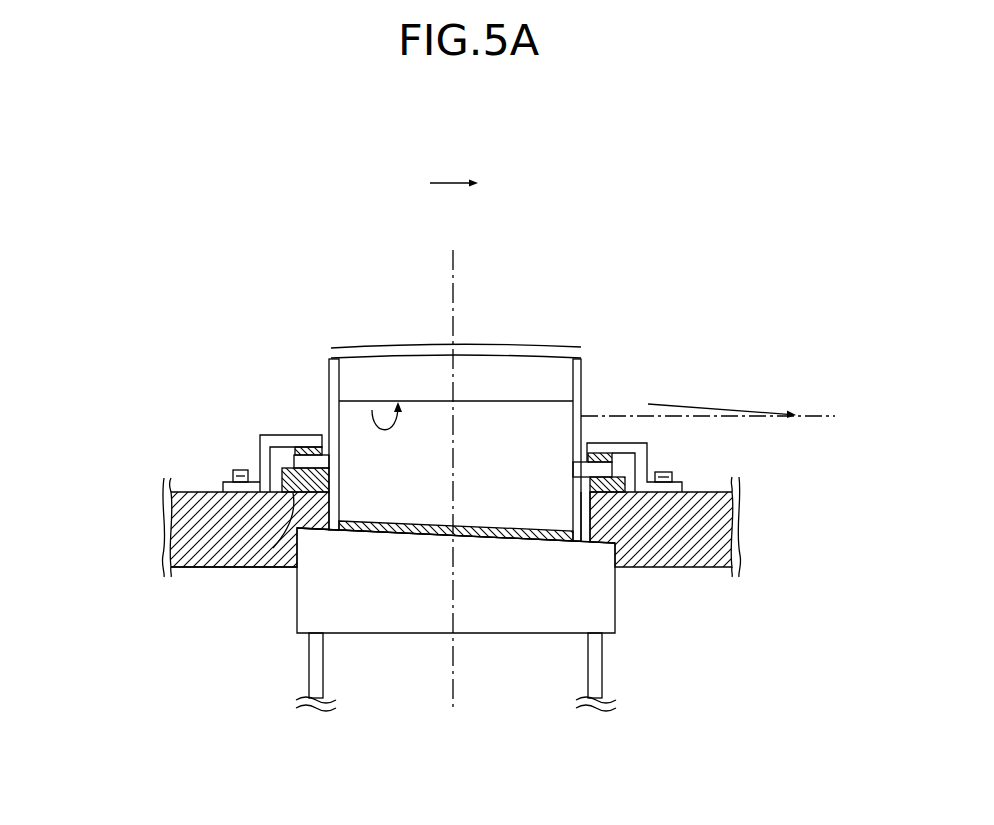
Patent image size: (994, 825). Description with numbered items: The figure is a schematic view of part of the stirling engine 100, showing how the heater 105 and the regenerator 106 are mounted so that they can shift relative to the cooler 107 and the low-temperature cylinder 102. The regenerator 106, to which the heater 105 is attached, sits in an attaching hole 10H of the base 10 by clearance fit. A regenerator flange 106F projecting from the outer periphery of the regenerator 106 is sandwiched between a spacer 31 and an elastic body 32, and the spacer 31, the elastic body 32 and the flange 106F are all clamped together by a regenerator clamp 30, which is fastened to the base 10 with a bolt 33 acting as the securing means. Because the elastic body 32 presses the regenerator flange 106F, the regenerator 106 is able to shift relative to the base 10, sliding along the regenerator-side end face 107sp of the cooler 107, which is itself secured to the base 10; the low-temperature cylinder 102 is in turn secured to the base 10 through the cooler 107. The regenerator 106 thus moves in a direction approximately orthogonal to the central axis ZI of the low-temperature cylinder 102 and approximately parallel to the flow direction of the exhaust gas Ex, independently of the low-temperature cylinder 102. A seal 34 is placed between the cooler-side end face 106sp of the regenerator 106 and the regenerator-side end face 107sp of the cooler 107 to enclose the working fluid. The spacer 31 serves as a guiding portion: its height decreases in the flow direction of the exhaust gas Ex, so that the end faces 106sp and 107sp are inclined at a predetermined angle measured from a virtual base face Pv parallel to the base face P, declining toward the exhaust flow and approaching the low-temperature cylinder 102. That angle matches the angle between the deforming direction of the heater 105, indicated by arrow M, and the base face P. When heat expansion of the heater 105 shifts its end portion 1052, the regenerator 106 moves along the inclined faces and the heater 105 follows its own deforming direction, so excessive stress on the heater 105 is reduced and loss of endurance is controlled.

The base 10 is at (193, 490).
The attaching hole 10H is at (592, 522).
The spacer 31 is at (253, 567).
The regenerator clamp 30 is at (268, 437).
The elastic body 32 is at (303, 448).
The bolt 33 is at (240, 478).
The seal 34 is at (356, 530).
The stirling engine 100 is at (663, 135).
The low-temperature cylinder 102 is at (600, 675).
The heater 105 is at (417, 380).
The end portion of the heater 1052 is at (372, 410).
The regenerator 106 is at (481, 413).
The regenerator flange 106F is at (330, 462).
The cooler-side end face 106sp is at (486, 540).
The cooler 107 is at (597, 609).
The regenerator-side end face 107sp is at (537, 532).
The central axis ZI is at (454, 468).
The deforming direction of the heater M is at (686, 400).
The base face P is at (670, 458).
The virtual base face Pv is at (811, 427).
The exhaust gas Ex is at (468, 186).